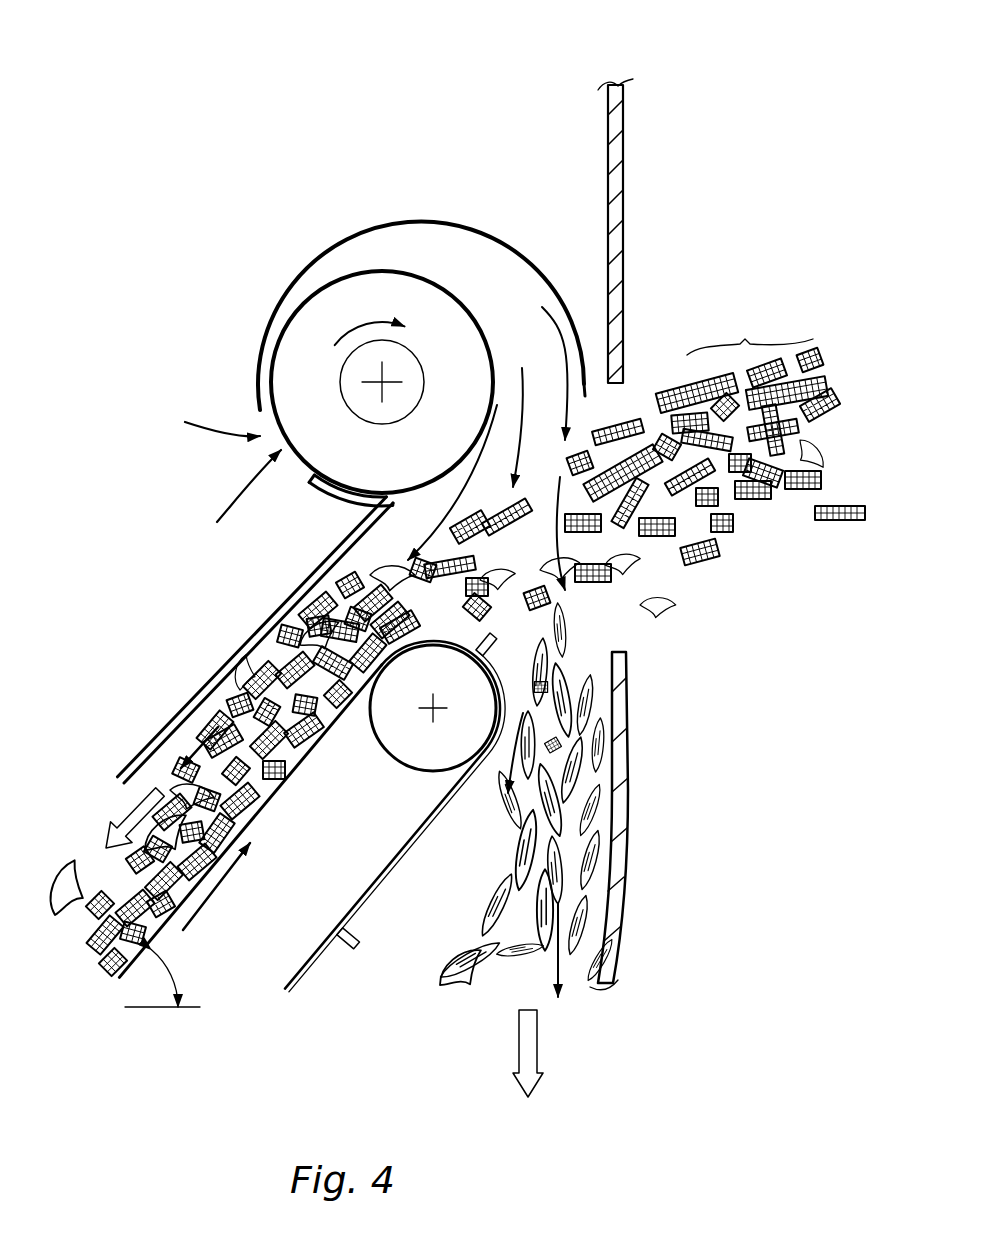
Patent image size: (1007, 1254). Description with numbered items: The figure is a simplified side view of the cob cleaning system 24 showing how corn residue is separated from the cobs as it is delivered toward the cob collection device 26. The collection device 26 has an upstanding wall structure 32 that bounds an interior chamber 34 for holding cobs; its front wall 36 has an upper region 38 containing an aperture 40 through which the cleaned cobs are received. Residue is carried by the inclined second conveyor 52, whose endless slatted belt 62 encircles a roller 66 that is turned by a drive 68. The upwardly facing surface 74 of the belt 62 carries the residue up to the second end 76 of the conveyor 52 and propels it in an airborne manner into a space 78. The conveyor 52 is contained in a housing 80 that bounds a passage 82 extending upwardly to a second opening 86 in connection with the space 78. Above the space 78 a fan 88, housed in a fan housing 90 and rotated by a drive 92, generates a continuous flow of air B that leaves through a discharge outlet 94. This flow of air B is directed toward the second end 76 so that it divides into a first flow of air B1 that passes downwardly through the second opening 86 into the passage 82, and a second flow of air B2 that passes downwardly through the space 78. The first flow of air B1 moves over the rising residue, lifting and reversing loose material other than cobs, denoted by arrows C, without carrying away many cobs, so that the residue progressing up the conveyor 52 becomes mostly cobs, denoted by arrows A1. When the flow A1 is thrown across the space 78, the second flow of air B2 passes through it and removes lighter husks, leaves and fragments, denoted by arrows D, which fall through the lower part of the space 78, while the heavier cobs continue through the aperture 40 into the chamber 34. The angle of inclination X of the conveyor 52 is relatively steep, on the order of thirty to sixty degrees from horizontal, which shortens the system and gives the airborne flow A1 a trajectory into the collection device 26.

The cob cleaning system 24 is at (182, 138).
The cob collection device 26 is at (532, 193).
The upstanding wall structure 32 is at (532, 221).
The front wall 36 is at (532, 221).
The upper region 38 is at (606, 128).
The interior cavity or chamber 34 is at (742, 152).
The aperture 40 is at (623, 400).
The second conveyor 52 is at (395, 857).
The endless slatted belt 62 is at (307, 967).
The roller 66 is at (397, 732).
The drive 68 is at (395, 735).
The upwardly facing surface 74 is at (118, 976).
The second end 76 is at (313, 650).
The space 78 is at (540, 637).
The housing 80 is at (137, 766).
The passage 82 is at (172, 758).
The second opening 86 is at (403, 530).
The fan 88 is at (317, 285).
The fan housing 90 is at (377, 218).
The drive 92 is at (412, 350).
The discharge outlet 94 is at (572, 388).
The flow of mostly cobs A1 is at (750, 337).
The flow of air B is at (527, 383).
The first flow of air B1 is at (470, 480).
The second flow of air B2 is at (582, 375).
The MOC flow C is at (118, 815).
The lighter residue elements D is at (537, 1043).
The angle of inclination X is at (180, 970).